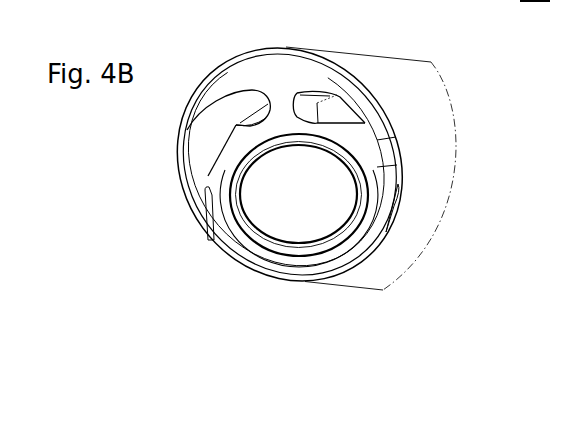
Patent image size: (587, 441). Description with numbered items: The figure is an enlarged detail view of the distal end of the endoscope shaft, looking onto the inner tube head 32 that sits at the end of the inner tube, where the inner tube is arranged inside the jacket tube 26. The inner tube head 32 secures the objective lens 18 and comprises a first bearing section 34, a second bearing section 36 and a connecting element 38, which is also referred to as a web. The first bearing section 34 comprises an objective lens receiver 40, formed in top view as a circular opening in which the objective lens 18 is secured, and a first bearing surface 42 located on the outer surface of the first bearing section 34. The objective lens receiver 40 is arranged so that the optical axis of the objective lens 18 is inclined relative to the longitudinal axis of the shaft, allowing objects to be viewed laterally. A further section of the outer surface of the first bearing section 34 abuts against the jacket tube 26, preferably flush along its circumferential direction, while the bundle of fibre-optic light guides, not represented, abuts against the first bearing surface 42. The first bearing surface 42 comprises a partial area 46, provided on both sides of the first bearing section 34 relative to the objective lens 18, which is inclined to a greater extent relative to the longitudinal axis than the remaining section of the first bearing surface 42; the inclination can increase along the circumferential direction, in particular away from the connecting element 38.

The objective lens 18 is at (253, 200).
The jacket tube 26 is at (433, 167).
The inner tube head 32 is at (362, 243).
The first bearing section 34 is at (305, 270).
The second bearing section 36 is at (295, 78).
The connecting element 38 is at (282, 103).
The objective lens receiver 40 is at (264, 243).
The first bearing surface 42 is at (362, 138).
The partial area 46 is at (205, 202).